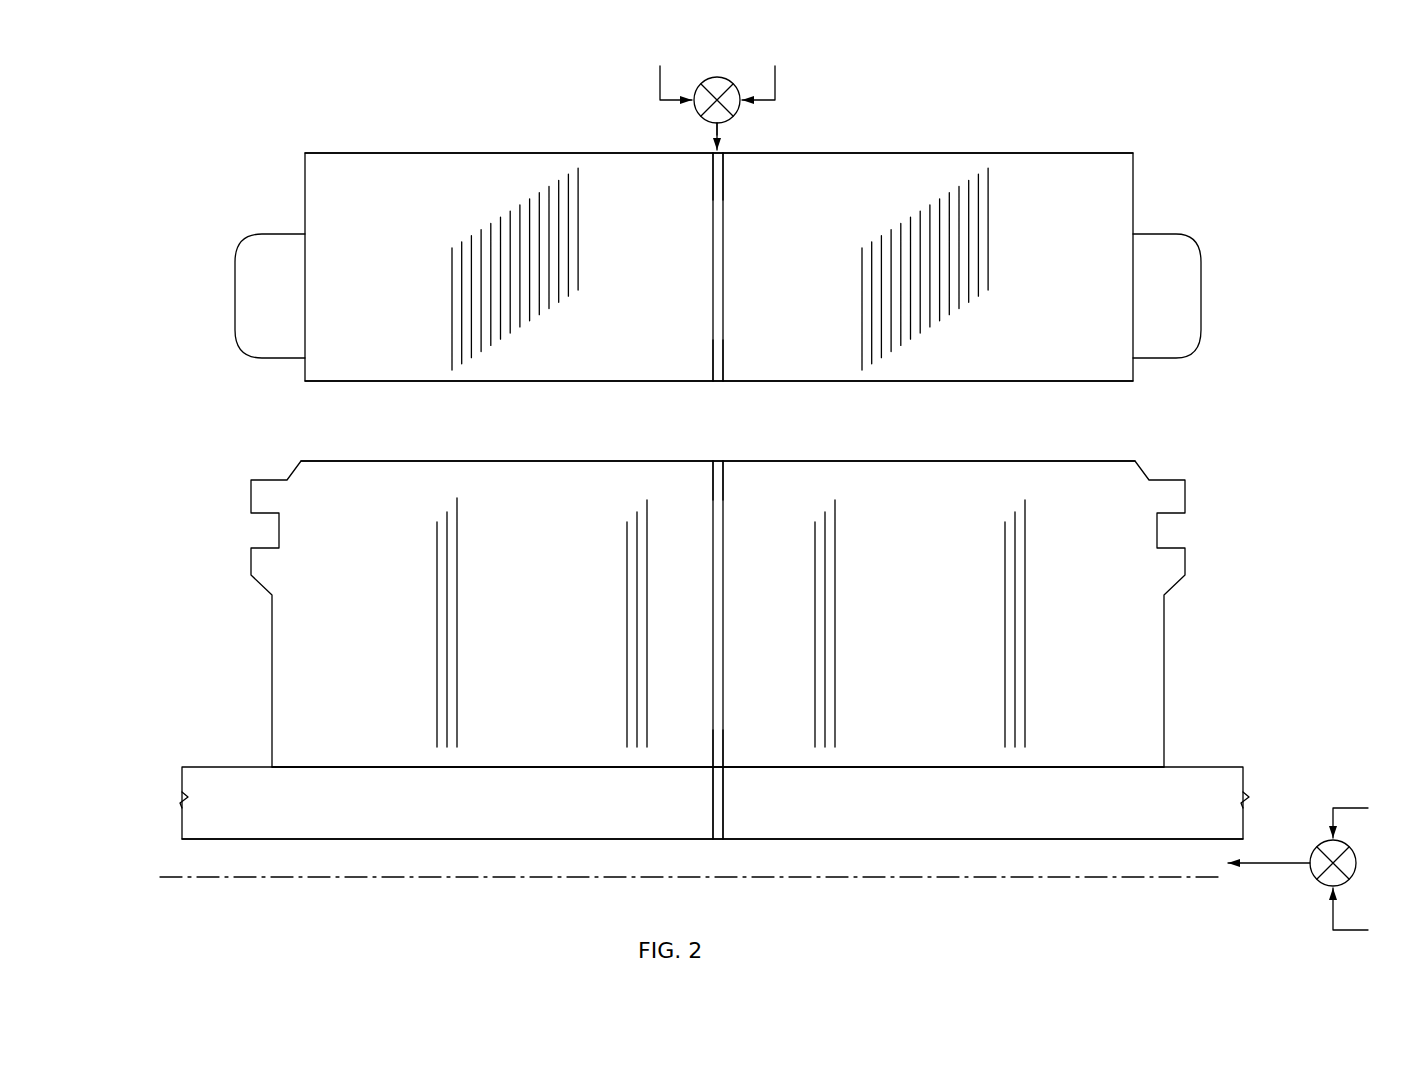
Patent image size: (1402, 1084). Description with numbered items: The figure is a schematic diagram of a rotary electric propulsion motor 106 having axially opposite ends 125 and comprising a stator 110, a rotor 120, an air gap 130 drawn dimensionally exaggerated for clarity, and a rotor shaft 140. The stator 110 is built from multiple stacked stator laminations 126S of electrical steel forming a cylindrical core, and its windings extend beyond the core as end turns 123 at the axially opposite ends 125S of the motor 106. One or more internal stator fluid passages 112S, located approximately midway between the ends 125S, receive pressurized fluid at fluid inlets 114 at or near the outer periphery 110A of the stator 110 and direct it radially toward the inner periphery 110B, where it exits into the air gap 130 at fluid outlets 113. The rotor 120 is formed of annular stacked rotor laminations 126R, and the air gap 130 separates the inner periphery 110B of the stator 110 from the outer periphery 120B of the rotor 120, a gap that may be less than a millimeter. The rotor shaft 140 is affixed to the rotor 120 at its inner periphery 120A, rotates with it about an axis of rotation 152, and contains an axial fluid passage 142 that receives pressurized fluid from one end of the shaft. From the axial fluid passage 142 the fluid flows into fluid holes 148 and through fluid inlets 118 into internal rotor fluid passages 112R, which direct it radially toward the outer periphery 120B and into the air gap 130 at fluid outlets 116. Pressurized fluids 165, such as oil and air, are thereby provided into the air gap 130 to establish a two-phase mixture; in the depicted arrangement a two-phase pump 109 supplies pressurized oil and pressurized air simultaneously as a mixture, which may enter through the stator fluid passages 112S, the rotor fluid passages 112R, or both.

The motor 106 is at (878, 72).
The two-phase pump 109 is at (1308, 883).
The stator 110 is at (308, 136).
The outer periphery of the stator 110A is at (445, 153).
The inner periphery of the stator 110B is at (416, 381).
The stator fluid passages 112S is at (722, 266).
The rotor fluid passages 112R is at (722, 548).
The fluid outlets 113 is at (720, 384).
The fluid inlets 114 is at (719, 165).
The fluid outlets 116 is at (718, 461).
The fluid inlets 118 is at (718, 762).
The rotor 120 is at (250, 650).
The inner periphery of the rotor 120A is at (490, 770).
The outer periphery of the rotor 120B is at (456, 461).
The end turns 123 is at (262, 234).
The axially opposite ends 125 is at (148, 392).
The axially opposite ends of the stator 125S is at (210, 345).
The stator laminations 126S is at (580, 170).
The rotor laminations 126R is at (826, 512).
The air gap 130 is at (290, 432).
The rotor shaft 140 is at (200, 767).
The axial fluid passage 142 is at (160, 858).
The fluid holes 148 is at (722, 808).
The axis of rotation 152 is at (170, 877).
The pressurized fluids 165 is at (718, 128).